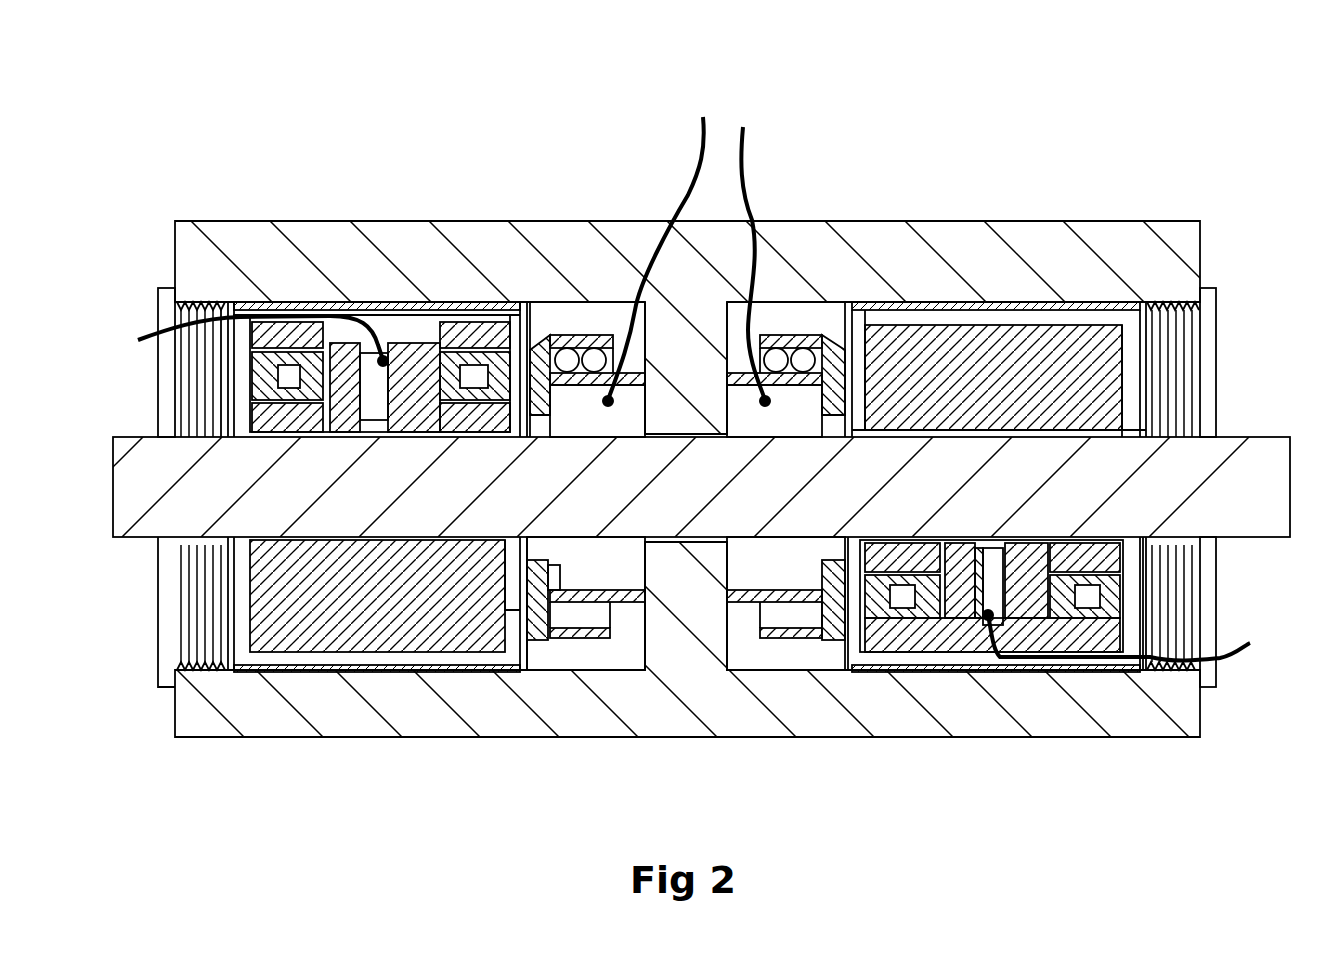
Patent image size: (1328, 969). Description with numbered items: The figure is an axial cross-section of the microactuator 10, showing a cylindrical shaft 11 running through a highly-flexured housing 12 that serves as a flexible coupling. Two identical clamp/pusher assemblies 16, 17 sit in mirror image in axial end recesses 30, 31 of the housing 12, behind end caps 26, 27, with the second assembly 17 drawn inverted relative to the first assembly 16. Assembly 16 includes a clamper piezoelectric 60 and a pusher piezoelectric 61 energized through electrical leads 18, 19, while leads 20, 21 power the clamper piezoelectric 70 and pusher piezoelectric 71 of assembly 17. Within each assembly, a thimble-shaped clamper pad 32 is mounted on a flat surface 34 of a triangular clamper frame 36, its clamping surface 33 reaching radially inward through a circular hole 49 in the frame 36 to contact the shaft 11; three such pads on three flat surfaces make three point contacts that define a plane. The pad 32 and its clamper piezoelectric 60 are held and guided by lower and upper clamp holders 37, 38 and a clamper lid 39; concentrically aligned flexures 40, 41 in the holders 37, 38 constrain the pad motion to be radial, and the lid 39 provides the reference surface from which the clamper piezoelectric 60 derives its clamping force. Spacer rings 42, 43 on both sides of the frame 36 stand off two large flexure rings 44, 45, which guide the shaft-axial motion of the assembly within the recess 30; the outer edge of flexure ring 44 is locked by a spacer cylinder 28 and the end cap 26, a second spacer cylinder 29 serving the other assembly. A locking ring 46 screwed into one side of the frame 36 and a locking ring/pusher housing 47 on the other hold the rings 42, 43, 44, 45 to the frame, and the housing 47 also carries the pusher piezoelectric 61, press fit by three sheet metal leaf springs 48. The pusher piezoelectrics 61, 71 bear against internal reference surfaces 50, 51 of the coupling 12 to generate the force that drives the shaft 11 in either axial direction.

The spindle motor assembly 10 is at (340, 104).
The shaft 11 is at (1020, 492).
The housing 12 is at (1078, 255).
The clamp/pusher assembly 16 is at (548, 334).
The clamp/pusher assembly 17 is at (810, 334).
The electrical lead 18 is at (138, 340).
The electrical lead 19 is at (688, 195).
The electrical lead 20 is at (1230, 653).
The electrical lead 21 is at (745, 165).
The end cap 26 is at (158, 673).
The end cap 27 is at (1217, 348).
The spacer cylinder 28 is at (510, 300).
The spacer cylinder 29 is at (918, 305).
The axial end recess 30 is at (568, 670).
The axial end recess 31 is at (770, 670).
The clamper pad 32 is at (300, 330).
The clamping surface 33 is at (360, 435).
The flat surface 34 is at (462, 415).
The clamper frame 36 is at (366, 620).
The lower clamp holder 37 is at (392, 320).
The upper clamp holder 38 is at (425, 330).
The clamper lid 39 is at (462, 325).
The flexures 40 is at (245, 348).
The flexures 41 is at (262, 378).
The spacer ring 42 is at (240, 612).
The spacer ring 43 is at (512, 655).
The large flexure ring 44 is at (217, 645).
The large flexure ring 45 is at (540, 640).
The locking ring 46 is at (213, 612).
The locking ring/pusher housing 47 is at (556, 340).
The sheet metal leaf springs 48 is at (589, 340).
The circular hole 49 is at (300, 415).
The internal reference surface 50 is at (648, 650).
The internal reference surface 51 is at (735, 605).
The clamper piezoelectric 60 is at (340, 345).
The pusher piezoelectric 61 is at (620, 640).
The clamper piezoelectric 70 is at (960, 615).
The pusher piezoelectric 71 is at (752, 605).